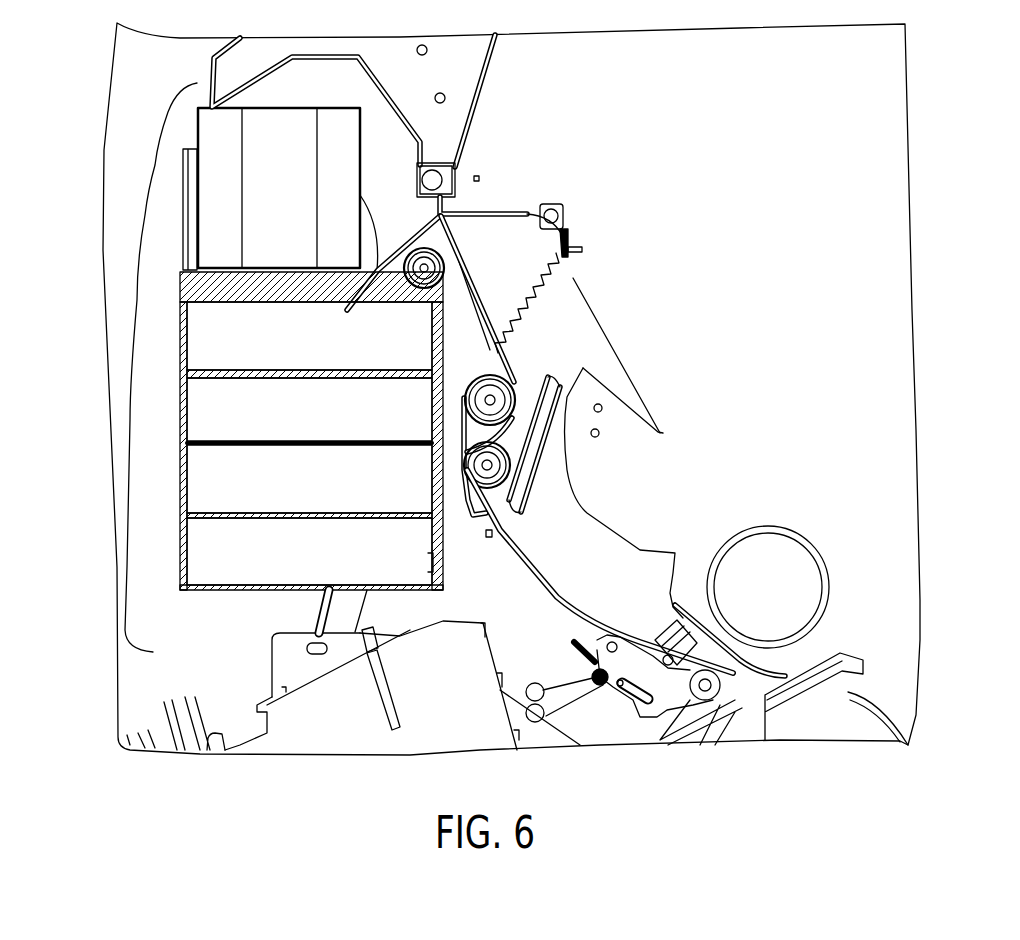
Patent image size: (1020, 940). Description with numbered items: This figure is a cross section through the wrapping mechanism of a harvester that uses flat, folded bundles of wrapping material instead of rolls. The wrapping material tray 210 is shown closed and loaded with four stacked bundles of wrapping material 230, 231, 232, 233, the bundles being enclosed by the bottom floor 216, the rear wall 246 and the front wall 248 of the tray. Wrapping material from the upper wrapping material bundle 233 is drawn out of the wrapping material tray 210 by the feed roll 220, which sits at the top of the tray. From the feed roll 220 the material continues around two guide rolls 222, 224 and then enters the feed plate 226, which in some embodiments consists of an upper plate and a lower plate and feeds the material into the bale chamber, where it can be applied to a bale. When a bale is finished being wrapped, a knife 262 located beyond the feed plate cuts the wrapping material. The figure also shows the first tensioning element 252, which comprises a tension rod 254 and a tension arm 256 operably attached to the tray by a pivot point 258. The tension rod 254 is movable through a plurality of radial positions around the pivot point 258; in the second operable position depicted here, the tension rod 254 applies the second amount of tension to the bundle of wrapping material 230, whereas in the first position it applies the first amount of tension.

The wrapping material tray 210 is at (146, 323).
The bottom floor 216 is at (228, 592).
The feed roll 220 is at (433, 260).
The guide roll 222 is at (515, 385).
The guide roll 224 is at (522, 488).
The feed plate 226 is at (520, 542).
The wrapping material bundle 230 is at (248, 550).
The wrapping material bundle 231 is at (248, 487).
The wrapping material bundle 232 is at (248, 425).
The wrapping material bundle 233 is at (248, 348).
The rear wall 246 is at (444, 534).
The front wall 248 is at (178, 563).
The first tensioning element 252 is at (516, 281).
The tension rod 254 is at (557, 291).
The tension arm 256 is at (633, 370).
The pivot point 258 is at (663, 433).
The knife 262 is at (573, 650).